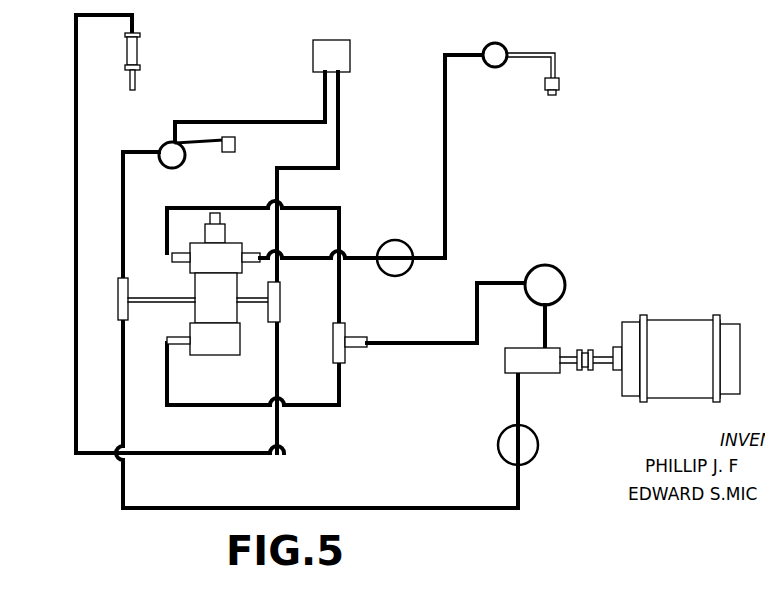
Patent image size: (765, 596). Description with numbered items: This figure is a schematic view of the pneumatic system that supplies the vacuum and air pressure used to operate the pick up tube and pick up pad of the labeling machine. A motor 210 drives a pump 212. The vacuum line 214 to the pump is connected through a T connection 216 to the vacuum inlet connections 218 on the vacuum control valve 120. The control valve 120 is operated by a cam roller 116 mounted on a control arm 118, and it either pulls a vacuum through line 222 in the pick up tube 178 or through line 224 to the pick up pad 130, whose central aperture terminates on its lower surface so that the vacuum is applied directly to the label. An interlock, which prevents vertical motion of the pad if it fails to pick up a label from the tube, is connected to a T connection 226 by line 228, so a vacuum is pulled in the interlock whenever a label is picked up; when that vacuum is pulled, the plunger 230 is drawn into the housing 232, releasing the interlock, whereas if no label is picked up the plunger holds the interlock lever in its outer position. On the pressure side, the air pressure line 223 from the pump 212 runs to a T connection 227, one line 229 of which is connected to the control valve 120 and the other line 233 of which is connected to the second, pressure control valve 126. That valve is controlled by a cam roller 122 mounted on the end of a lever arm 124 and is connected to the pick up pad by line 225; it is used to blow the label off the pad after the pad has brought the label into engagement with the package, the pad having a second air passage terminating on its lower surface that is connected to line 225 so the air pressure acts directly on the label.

The cam roller 116 is at (220, 215).
The control arm 118 is at (225, 237).
The vacuum control valve 120 is at (228, 308).
The cam roller 122 is at (236, 146).
The lever arm 124 is at (203, 137).
The pressure control valve 126 is at (186, 158).
The pick up pad 130 is at (352, 58).
The pick up tube 178 is at (556, 55).
The motor 210 is at (664, 364).
The pump 212 is at (540, 372).
The vacuum line 214 is at (478, 283).
The T connection 216 is at (350, 350).
The vacuum inlet connections 218 is at (180, 252).
The line 222 is at (443, 152).
The air pressure line 223 is at (517, 405).
The line 224 is at (340, 152).
The line 225 is at (233, 122).
The T connection 226 is at (285, 300).
The T connection 227 is at (118, 290).
The line 228 is at (75, 333).
The line 229 is at (172, 297).
The plunger 230 is at (132, 90).
The housing 232 is at (141, 70).
The line 233 is at (122, 215).